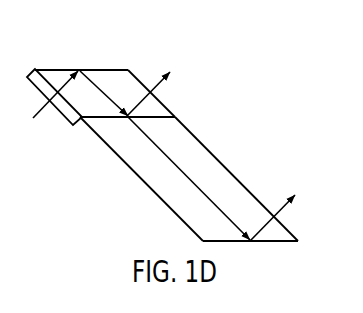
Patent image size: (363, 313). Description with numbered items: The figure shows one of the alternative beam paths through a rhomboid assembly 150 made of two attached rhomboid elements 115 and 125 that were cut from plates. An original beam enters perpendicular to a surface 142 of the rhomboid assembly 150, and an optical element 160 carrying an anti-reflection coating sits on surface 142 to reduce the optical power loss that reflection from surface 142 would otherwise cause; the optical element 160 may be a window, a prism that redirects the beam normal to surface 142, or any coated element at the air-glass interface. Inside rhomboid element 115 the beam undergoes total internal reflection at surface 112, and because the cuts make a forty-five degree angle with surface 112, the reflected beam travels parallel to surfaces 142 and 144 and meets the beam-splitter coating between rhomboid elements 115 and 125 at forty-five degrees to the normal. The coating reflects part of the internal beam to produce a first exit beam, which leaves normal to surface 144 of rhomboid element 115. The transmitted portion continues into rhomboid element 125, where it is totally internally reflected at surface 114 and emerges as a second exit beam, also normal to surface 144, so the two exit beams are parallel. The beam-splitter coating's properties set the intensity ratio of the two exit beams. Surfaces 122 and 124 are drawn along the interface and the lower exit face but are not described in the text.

The rhomboid assembly 150 is at (301, 99).
The surface 112 is at (112, 69).
The surface 114 is at (158, 115).
The rhomboid element 115 is at (123, 85).
The interface surface 122 is at (97, 118).
The optical element 160 is at (44, 67).
The surface 142 is at (143, 180).
The surface 144 is at (210, 150).
The bottom exit surface 124 is at (281, 244).
The rhomboid element 125 is at (248, 202).